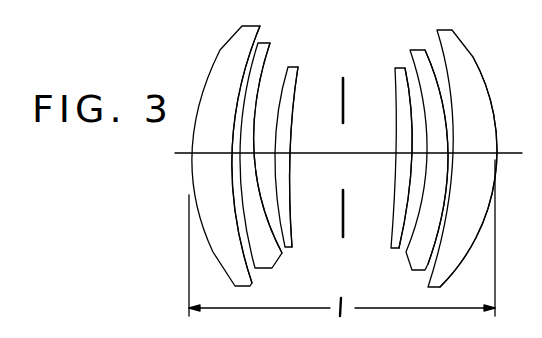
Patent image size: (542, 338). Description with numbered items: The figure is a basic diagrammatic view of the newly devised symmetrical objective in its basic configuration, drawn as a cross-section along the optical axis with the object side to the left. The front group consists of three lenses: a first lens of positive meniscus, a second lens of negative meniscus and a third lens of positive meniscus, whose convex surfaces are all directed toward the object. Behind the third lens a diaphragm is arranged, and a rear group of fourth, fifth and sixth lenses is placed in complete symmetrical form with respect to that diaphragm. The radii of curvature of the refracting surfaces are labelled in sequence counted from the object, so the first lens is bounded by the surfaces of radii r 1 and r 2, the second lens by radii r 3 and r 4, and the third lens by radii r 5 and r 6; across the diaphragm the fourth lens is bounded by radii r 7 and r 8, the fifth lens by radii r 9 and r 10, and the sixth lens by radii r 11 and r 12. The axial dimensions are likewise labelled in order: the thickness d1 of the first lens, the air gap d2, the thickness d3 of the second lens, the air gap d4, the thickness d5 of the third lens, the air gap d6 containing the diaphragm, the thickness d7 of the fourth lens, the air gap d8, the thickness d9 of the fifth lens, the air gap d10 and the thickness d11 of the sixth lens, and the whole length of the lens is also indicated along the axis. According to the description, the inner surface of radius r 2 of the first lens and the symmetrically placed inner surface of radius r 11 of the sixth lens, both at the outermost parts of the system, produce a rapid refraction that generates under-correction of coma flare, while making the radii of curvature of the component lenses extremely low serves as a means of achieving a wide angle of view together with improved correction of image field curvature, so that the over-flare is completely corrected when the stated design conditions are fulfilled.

The radius of curvature r1 1 is at (214, 53).
The radius of curvature r2 2 is at (255, 45).
The radius of curvature r3 3 is at (262, 44).
The radius of curvature r4 4 is at (270, 58).
The radius of curvature r5 5 is at (299, 68).
The radius of curvature r6 6 is at (295, 90).
The radius of curvature r7 7 is at (395, 95).
The radius of curvature r8 8 is at (405, 80).
The radius of curvature r9 9 is at (411, 60).
The radius of curvature r10 10 is at (430, 57).
The radius of curvature r11 11 is at (440, 53).
The radius of curvature r12 12 is at (473, 57).
The axial thickness d1 is at (210, 153).
The axial air gap d2 is at (235, 150).
The axial thickness d3 is at (246, 155).
The axial air gap d4 is at (266, 153).
The axial thickness d5 is at (285, 155).
The axial air gap d6 is at (343, 144).
The axial thickness d7 is at (405, 153).
The axial air gap d8 is at (422, 155).
The axial thickness d9 is at (443, 153).
The axial air gap d10 is at (450, 157).
The axial thickness d11 is at (477, 155).